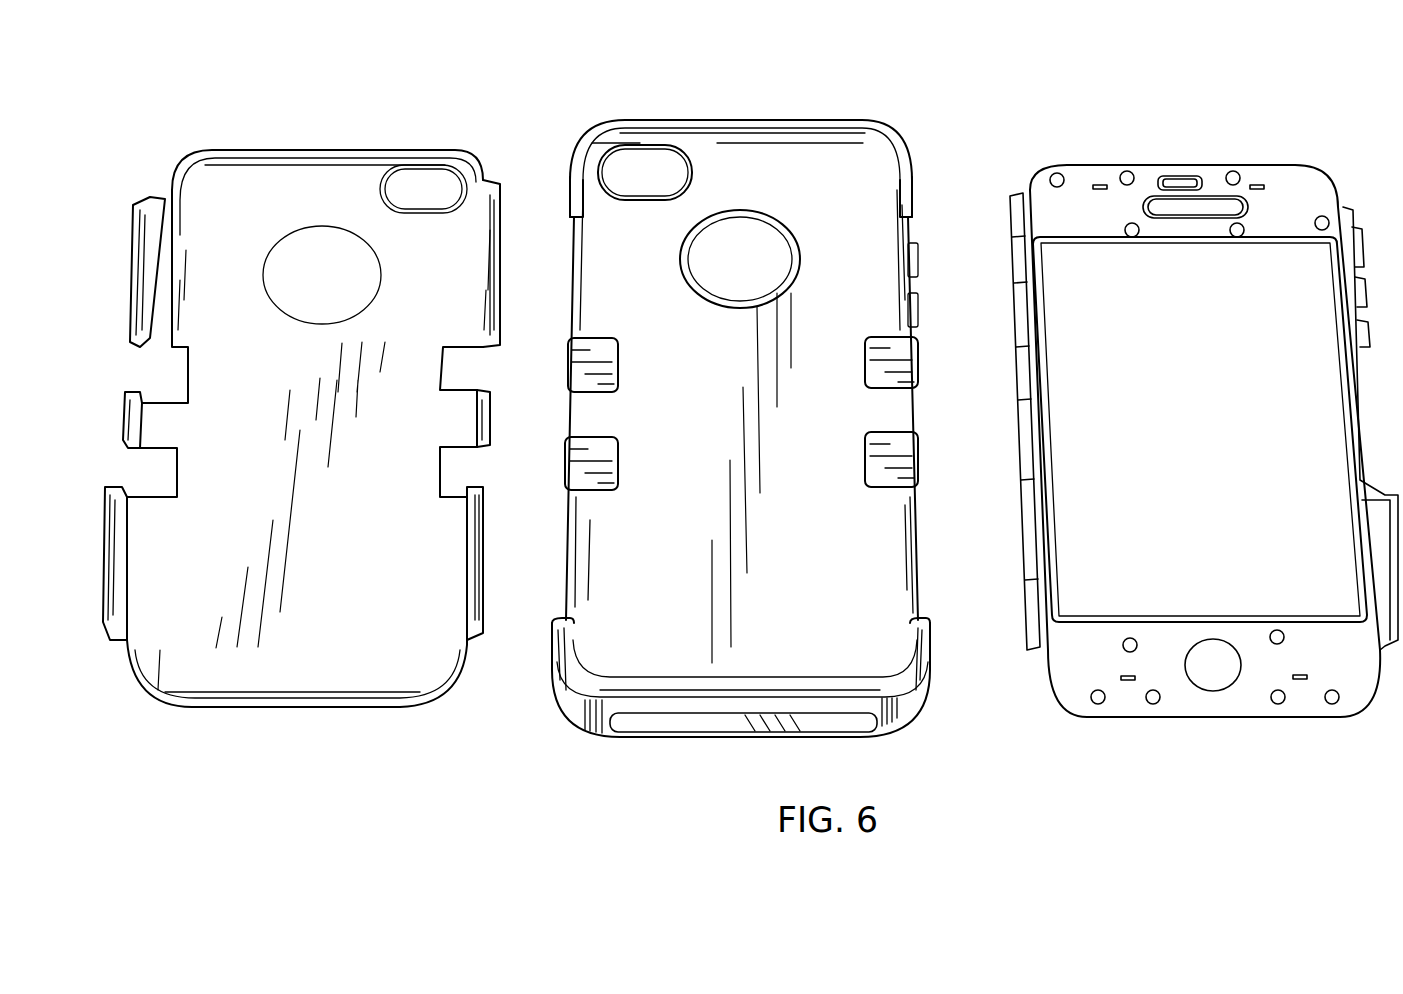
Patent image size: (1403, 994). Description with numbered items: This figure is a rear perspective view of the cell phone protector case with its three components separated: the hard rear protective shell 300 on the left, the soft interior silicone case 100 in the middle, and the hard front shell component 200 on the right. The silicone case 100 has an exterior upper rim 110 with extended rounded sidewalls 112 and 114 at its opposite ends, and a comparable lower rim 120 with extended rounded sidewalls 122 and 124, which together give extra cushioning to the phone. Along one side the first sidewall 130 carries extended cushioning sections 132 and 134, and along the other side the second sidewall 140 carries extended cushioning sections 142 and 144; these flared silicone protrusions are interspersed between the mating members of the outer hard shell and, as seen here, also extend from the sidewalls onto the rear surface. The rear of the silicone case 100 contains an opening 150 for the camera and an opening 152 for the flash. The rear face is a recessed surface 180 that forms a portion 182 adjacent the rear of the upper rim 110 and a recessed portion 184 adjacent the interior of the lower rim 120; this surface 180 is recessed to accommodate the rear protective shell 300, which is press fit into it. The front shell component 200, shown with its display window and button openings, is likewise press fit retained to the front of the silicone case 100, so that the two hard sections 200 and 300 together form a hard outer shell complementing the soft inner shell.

The interior silicone case 100 is at (766, 60).
The exterior upper rim 110 is at (711, 122).
The extended rounded sidewall 112 is at (590, 128).
The extended rounded sidewall 114 is at (892, 128).
The lower rim silicone section 120 is at (719, 703).
The extended rounded sidewall 122 is at (583, 717).
The extended rounded sidewall 124 is at (912, 698).
The first sidewall 130 is at (910, 231).
The extended cushioning section 132 is at (905, 350).
The extended cushioning section 134 is at (905, 446).
The second sidewall 140 is at (571, 285).
The extended cushioning section 142 is at (575, 378).
The extended cushioning section 144 is at (575, 474).
The camera opening 150 is at (766, 280).
The flash opening 152 is at (649, 157).
The recessed surface 180 is at (893, 573).
The recessed portion adjacent upper rim 182 is at (813, 134).
The recessed portion adjacent lower rim 184 is at (832, 672).
The front shell component 200 is at (1196, 136).
The rear protective shell 300 is at (306, 128).